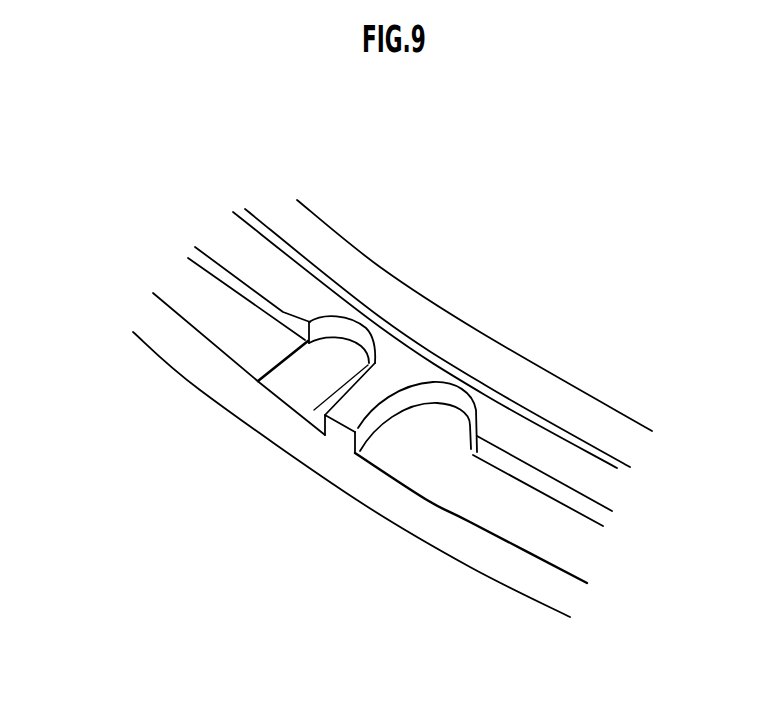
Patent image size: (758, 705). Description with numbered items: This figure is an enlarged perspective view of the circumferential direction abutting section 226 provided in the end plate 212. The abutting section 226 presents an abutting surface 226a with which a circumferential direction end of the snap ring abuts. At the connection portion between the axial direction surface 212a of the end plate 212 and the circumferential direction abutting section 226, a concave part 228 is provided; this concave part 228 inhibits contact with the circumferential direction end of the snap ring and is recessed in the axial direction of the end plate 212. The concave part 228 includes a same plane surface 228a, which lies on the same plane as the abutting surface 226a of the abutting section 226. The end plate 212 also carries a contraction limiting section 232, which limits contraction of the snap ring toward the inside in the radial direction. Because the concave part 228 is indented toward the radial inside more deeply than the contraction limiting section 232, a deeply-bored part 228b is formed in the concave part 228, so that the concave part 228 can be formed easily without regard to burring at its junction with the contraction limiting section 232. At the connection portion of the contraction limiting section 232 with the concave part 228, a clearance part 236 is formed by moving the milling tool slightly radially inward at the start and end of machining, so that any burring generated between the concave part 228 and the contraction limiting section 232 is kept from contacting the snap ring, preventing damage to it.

The end plate 212 is at (176, 220).
The axial direction surface 212a is at (498, 510).
The circumferential direction abutting section 226 is at (353, 437).
The abutting surface 226a is at (377, 455).
The concave part 228 is at (307, 385).
The same plane surface 228a is at (380, 485).
The deeply-bored part 228b is at (327, 397).
The contraction limiting section 232 is at (242, 283).
The clearance part 236 is at (297, 323).